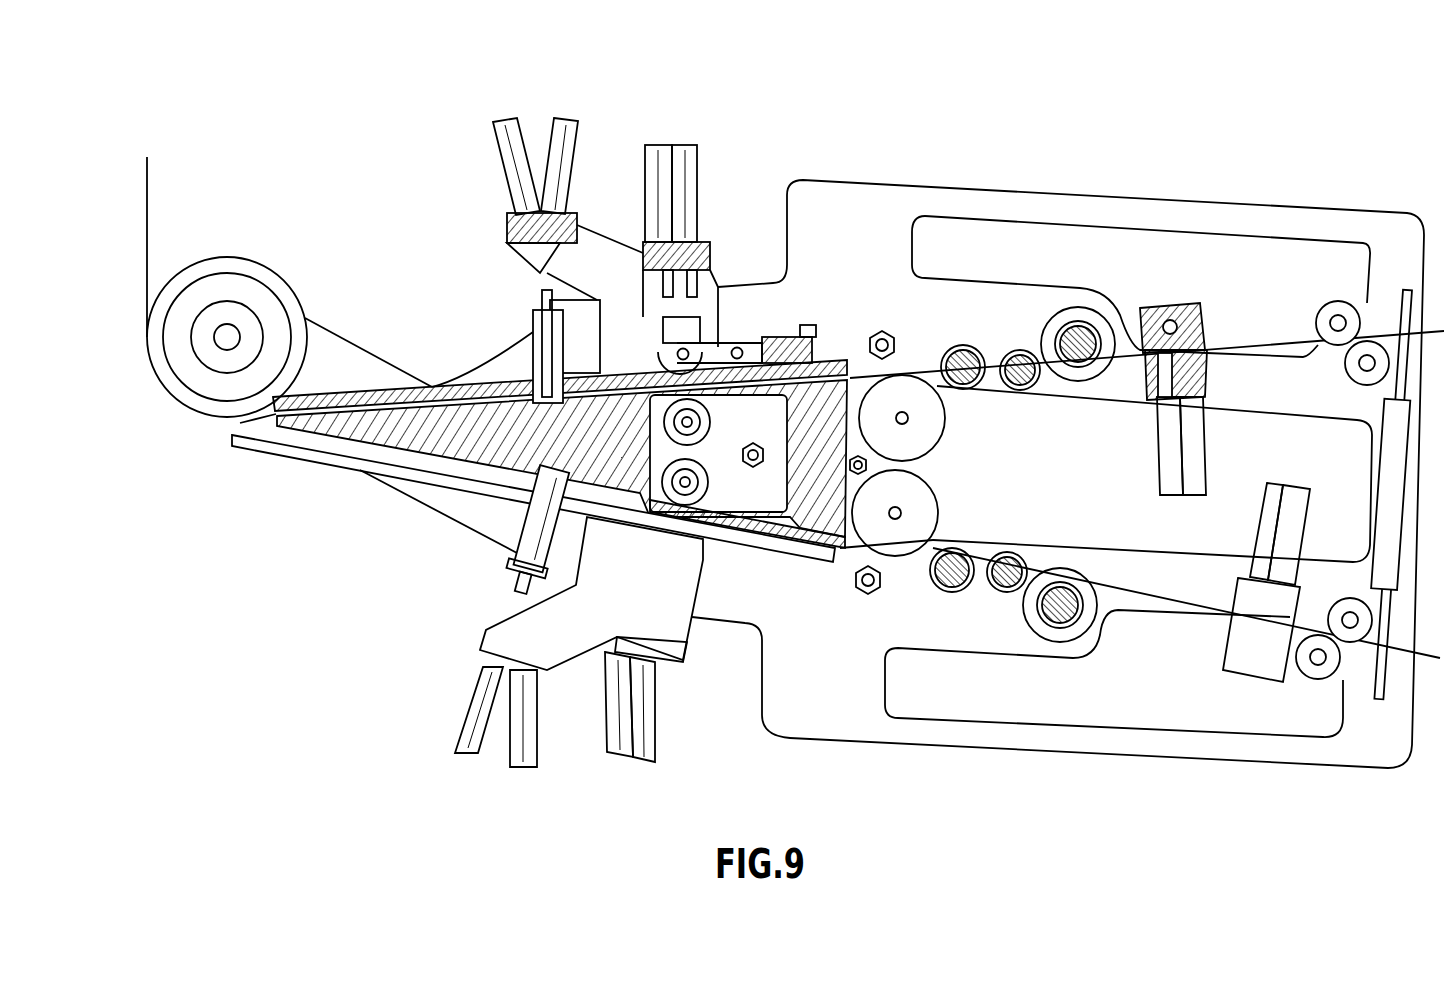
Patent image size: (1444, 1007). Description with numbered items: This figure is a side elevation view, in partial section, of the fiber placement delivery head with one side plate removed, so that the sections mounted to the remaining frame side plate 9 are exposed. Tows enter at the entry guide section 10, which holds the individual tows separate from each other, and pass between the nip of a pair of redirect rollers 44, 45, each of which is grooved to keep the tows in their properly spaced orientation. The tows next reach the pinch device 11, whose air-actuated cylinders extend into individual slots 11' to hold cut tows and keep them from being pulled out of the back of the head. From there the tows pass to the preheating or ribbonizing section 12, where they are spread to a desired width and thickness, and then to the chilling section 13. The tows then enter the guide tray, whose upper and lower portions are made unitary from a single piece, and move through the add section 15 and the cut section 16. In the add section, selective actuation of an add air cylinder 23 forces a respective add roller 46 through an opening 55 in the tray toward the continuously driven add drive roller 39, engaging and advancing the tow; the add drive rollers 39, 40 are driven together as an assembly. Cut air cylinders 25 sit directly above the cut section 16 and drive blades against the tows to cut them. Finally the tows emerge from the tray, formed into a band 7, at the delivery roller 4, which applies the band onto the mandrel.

The delivery roller 4 is at (272, 283).
The band 7 is at (150, 226).
The frame side plate 9 is at (882, 203).
The entry guide section 10 is at (1407, 712).
The pinch device 11 is at (1225, 478).
The slots 11' is at (1211, 357).
The preheating section 12 is at (973, 400).
The chilling section 13 is at (918, 350).
The add section 15 is at (724, 244).
The cut section 16 is at (505, 330).
The add air cylinder 23 is at (660, 145).
The cut air cylinder 25 is at (515, 125).
The add drive roller 39 is at (713, 424).
The add drive roller 40 is at (712, 480).
The redirect roller 44 is at (1357, 375).
The redirect roller 45 is at (1348, 305).
The add roller 46 is at (660, 346).
The opening 55 is at (652, 352).